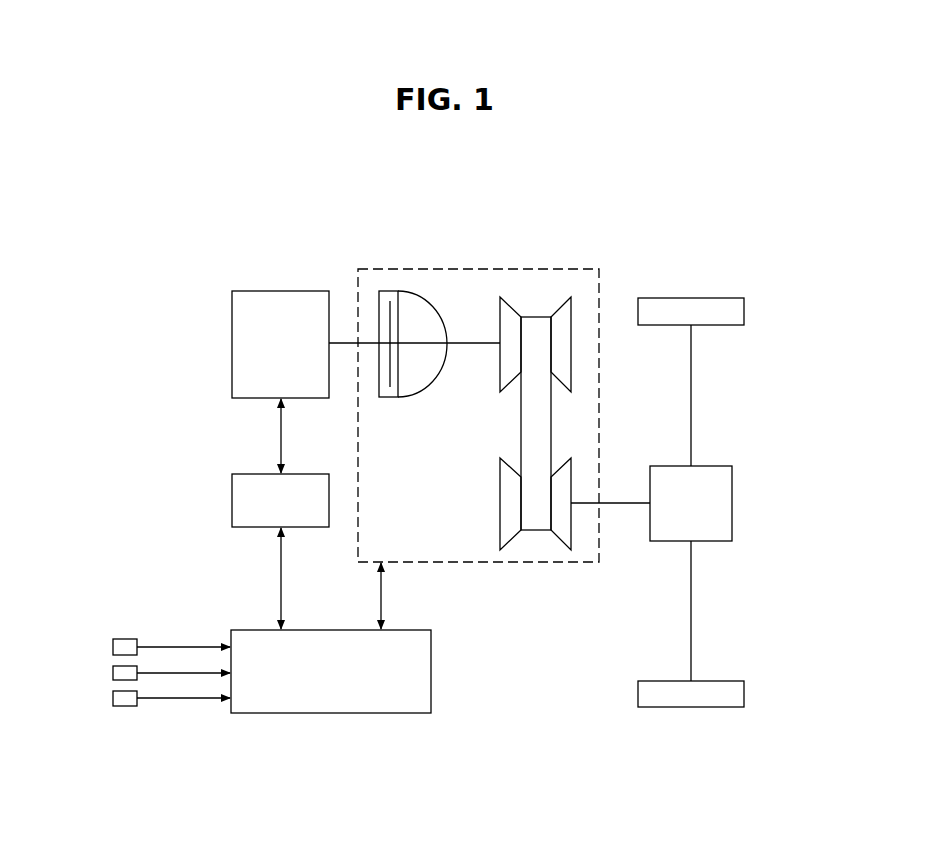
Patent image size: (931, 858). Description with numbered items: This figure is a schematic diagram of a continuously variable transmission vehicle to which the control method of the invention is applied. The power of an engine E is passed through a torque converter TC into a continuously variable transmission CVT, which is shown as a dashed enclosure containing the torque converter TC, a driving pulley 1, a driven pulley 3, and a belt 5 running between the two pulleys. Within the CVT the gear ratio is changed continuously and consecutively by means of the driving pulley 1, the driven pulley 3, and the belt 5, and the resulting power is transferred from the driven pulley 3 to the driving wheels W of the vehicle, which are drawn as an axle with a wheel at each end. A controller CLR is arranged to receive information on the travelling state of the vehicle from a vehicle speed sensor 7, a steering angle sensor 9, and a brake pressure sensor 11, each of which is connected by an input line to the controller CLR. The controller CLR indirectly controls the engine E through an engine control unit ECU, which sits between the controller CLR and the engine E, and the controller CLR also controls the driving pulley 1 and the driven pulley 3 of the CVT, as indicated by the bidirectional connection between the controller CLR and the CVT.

The driving pulley 1 is at (565, 311).
The driven pulley 3 is at (513, 532).
The belt 5 is at (538, 424).
The vehicle speed sensor 7 is at (119, 647).
The steering angle sensor 9 is at (119, 674).
The brake pressure sensor 11 is at (119, 699).
The engine E is at (238, 343).
The torque converter TC is at (417, 292).
The continuously variable transmission CVT is at (548, 269).
The engine control unit ECU is at (238, 501).
The controller CLR is at (332, 703).
The driving wheels W is at (735, 312).